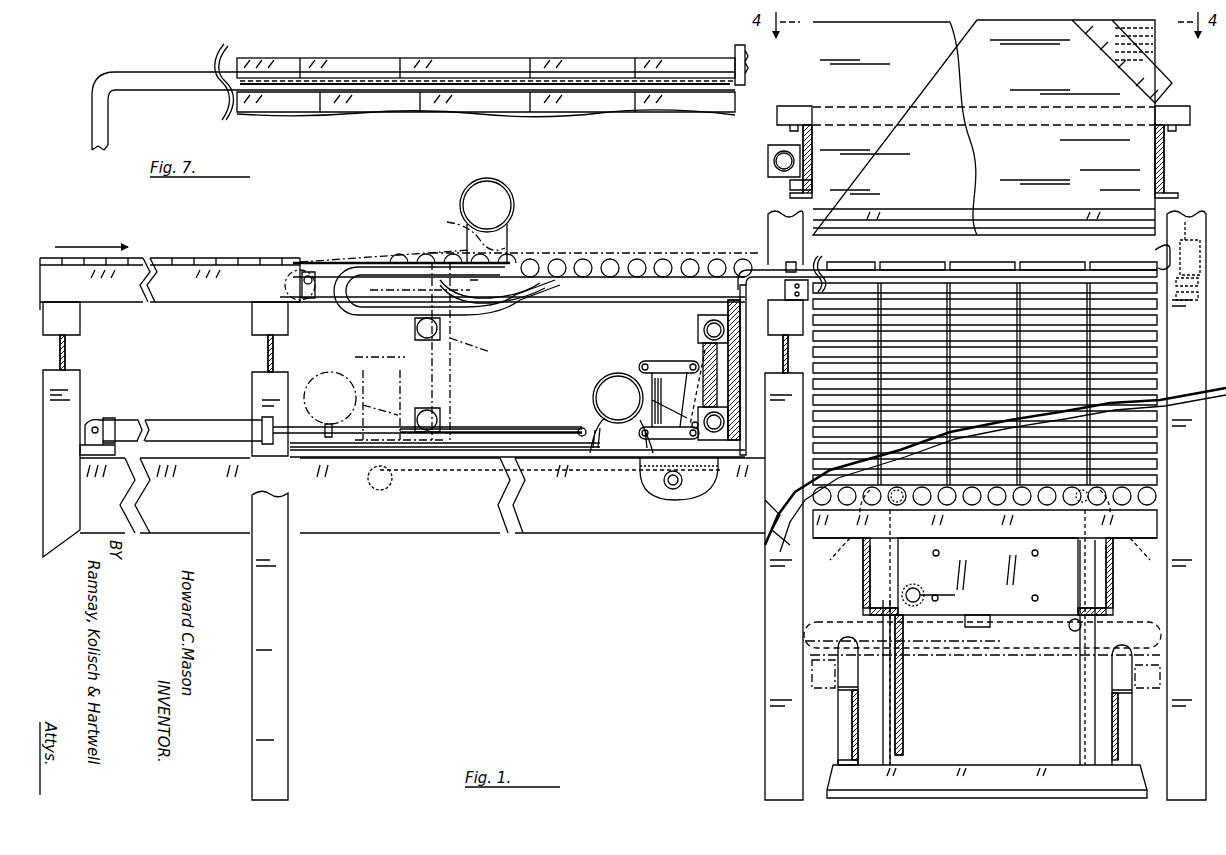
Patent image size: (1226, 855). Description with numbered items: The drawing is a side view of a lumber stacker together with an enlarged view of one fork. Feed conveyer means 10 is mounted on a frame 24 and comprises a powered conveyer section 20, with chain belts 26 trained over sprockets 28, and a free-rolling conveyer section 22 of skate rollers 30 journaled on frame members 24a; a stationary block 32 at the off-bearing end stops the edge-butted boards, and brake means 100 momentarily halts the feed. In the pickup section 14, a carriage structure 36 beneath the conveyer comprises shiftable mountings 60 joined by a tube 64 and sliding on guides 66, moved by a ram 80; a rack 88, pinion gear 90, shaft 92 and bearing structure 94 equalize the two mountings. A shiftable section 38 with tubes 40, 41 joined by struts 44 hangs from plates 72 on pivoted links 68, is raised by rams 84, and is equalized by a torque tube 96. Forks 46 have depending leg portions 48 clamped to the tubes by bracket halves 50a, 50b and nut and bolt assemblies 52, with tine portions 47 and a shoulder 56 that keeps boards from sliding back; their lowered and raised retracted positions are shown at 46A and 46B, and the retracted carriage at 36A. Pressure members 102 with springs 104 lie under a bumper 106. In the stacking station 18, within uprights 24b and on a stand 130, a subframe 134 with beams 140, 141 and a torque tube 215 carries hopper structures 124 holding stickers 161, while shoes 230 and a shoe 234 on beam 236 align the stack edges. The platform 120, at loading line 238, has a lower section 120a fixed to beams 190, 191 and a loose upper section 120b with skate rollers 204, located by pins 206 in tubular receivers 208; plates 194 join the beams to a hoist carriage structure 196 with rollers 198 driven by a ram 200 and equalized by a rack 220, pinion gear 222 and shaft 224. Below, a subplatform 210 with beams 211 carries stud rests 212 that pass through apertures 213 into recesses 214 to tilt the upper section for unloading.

In FIG. 1, the feed conveyer means 10 is at (278, 238).
In FIG. 1, the pickup section 14 is at (430, 517).
In FIG. 1, the stacking station 18 is at (768, 575).
In FIG. 1, the conveyer section 20 is at (170, 298).
In FIG. 1, the conveyer section 22 is at (558, 300).
In FIG. 1, the frame 24 is at (262, 388).
In FIG. 1, the frame member 24a is at (596, 300).
In FIG. 1, the vertical uprights 24b is at (1167, 712).
In FIG. 1, the chain belt 26 is at (212, 268).
In FIG. 1, the sprocket 28 is at (296, 284).
In FIG. 1, the skate rollers 30 is at (628, 285).
In FIG. 1, the stationary block 32 is at (785, 241).
In FIG. 1, the carriage structure 36 is at (585, 394).
In FIG. 1, the carriage structure retracted position 36A is at (321, 368).
In FIG. 1, the shiftable section 38 is at (748, 380).
In FIG. 1, the mounting bar means 40 is at (728, 416).
In FIG. 1, the mounting bar means 41 is at (700, 338).
In FIG. 1, the struts 44 is at (722, 392).
In FIG. 7, the forks 46 is at (178, 72).
In FIG. 1, the forks 46 is at (740, 288).
In FIG. 1, the lowered retracted position of forks 46A is at (522, 356).
In FIG. 1, the raised retracted position of forks 46B is at (446, 225).
In FIG. 7, the tine portions 47 is at (340, 92).
In FIG. 1, the tine portions 47 is at (850, 270).
In FIG. 1, the depending leg portion 48 is at (746, 350).
In FIG. 1, the bracket half 50a is at (704, 322).
In FIG. 1, the bracket half 50b is at (704, 333).
In FIG. 1, the nut and bolt assemblies 52 is at (785, 300).
In FIG. 7, the shoulder 56 is at (232, 60).
In FIG. 1, the shoulder 56 is at (820, 268).
In FIG. 1, the shiftable mountings 60 is at (596, 458).
In FIG. 1, the tube 64 is at (602, 385).
In FIG. 1, the guides 66 is at (525, 455).
In FIG. 1, the pivoted links 68 is at (660, 410).
In FIG. 1, the plates 72 is at (640, 365).
In FIG. 1, the ram 80 is at (150, 412).
In FIG. 1, the ram 84 is at (699, 389).
In FIG. 1, the rack 88 is at (640, 475).
In FIG. 1, the pinion gear 90 is at (678, 492).
In FIG. 1, the shaft 92 is at (665, 490).
In FIG. 1, the bearing structure 94 is at (700, 480).
In FIG. 1, the torque tube 96 is at (644, 362).
In FIG. 1, the brake means 100 is at (392, 233).
In FIG. 1, the pressure member 102 is at (545, 285).
In FIG. 1, the spring 104 is at (345, 285).
In FIG. 1, the bumper 106 is at (512, 192).
In FIG. 1, the platform 120 is at (1150, 527).
In FIG. 1, the lower section 120a is at (1058, 508).
In FIG. 1, the upper section 120b is at (980, 536).
In FIG. 1, the hopper structures 124 is at (1090, 226).
In FIG. 1, the stand 130 is at (1160, 596).
In FIG. 1, the shiftable subframe 134 is at (1158, 258).
In FIG. 1, the beam 140 is at (790, 186).
In FIG. 1, the beam 141 is at (1166, 155).
In FIG. 7, the stickers 161 is at (712, 88).
In FIG. 1, the stickers 161 is at (1160, 38).
In FIG. 1, the beam 190 is at (866, 585).
In FIG. 1, the beam 191 is at (1106, 580).
In FIG. 1, the plates 194 is at (988, 576).
In FIG. 1, the hoist carriage structure 196 is at (1008, 636).
In FIG. 1, the rollers 198 is at (1070, 628).
In FIG. 1, the ram 200 is at (958, 250).
In FIG. 1, the skate rollers 204 is at (1018, 506).
In FIG. 1, the pins 206 is at (1038, 552).
In FIG. 1, the tubular receivers 208 is at (1048, 605).
In FIG. 1, the subplatform 210 is at (848, 738).
In FIG. 1, the beams 211 is at (1088, 748).
In FIG. 1, the stud rests 212 is at (1132, 680).
In FIG. 1, the apertures 213 is at (1150, 540).
In FIG. 1, the recesses 214 is at (905, 522).
In FIG. 1, the torque tube 215 is at (766, 162).
In FIG. 1, the rack 220 is at (905, 690).
In FIG. 1, the pinion gear 222 is at (916, 588).
In FIG. 1, the shaft 224 is at (940, 594).
In FIG. 1, the shoes 230 is at (785, 336).
In FIG. 7, the shoe 234 is at (735, 52).
In FIG. 1, the beam 236 is at (1152, 212).
In FIG. 1, the line 238 is at (1185, 290).